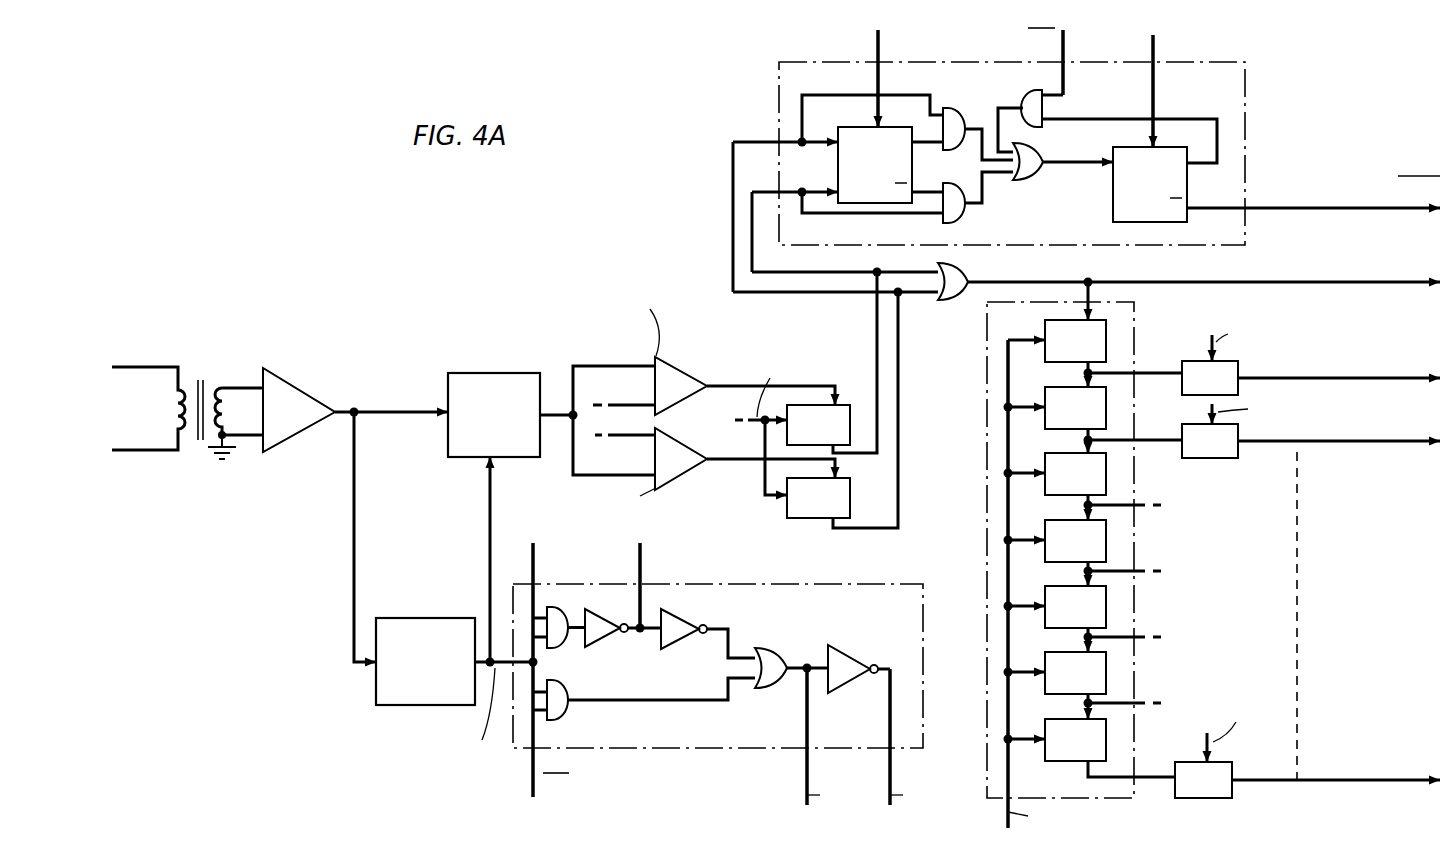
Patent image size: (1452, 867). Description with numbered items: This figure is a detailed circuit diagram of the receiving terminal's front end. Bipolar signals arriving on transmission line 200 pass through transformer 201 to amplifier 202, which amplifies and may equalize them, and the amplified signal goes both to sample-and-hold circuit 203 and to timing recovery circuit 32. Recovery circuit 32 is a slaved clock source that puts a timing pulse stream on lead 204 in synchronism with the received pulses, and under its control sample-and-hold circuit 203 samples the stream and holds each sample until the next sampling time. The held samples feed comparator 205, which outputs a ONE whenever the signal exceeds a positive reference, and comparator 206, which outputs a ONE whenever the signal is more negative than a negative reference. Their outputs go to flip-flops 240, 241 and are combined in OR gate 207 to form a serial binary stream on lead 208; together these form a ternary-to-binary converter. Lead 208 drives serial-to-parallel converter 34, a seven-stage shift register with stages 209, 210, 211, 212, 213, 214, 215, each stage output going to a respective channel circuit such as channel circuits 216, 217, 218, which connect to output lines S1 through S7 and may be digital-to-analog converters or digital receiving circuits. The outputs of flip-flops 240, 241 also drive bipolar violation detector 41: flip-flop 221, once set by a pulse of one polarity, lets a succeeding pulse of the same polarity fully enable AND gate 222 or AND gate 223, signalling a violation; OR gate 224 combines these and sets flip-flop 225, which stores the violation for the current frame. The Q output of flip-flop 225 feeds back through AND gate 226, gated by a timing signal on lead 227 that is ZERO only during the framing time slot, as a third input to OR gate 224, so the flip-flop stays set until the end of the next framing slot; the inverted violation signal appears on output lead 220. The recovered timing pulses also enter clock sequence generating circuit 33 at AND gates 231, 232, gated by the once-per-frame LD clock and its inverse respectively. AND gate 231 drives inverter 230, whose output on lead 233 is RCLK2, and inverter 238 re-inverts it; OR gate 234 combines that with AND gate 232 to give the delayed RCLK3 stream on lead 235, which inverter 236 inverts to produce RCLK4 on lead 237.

The transmission line 200 is at (163, 400).
The transformer 201 is at (229, 357).
The amplifier 202 is at (304, 384).
The sample-and-hold circuit 203 is at (505, 373).
The lead 204 is at (508, 668).
The comparator 205 is at (682, 371).
The comparator 206 is at (694, 455).
The OR gate 207 is at (950, 301).
The lead 208 is at (1006, 282).
The shift register stage 209 is at (1107, 333).
The shift register stage 210 is at (1107, 410).
The shift register stage 211 is at (1107, 478).
The shift register stage 212 is at (1107, 545).
The shift register stage 213 is at (1107, 608).
The shift register stage 214 is at (1107, 675).
The shift register stage 215 is at (1107, 740).
The channel circuit 216 is at (1240, 368).
The channel circuit 217 is at (1222, 458).
The channel circuit 218 is at (1226, 798).
The output lead 220 is at (1275, 209).
The flip-flop 221 is at (851, 127).
The AND gate 222 is at (950, 108).
The AND gate 223 is at (968, 213).
The OR gate 224 is at (1040, 178).
The flip-flop 225 is at (1124, 147).
The AND gate 226 is at (1028, 94).
The lead 227 is at (1063, 81).
The inverter 230 is at (601, 621).
The AND gate 231 is at (557, 648).
The AND gate 232 is at (565, 717).
The lead 233 is at (640, 563).
The OR gate 234 is at (776, 652).
The lead 235 is at (807, 765).
The inverter 236 is at (846, 652).
The lead 237 is at (890, 765).
The inverter 238 is at (680, 622).
The flip-flop 240 is at (843, 401).
The flip-flop 241 is at (808, 520).
The timing recovery circuit 32 is at (430, 618).
The clock sequence generating circuit 33 is at (818, 586).
The serial-to-parallel converter 34 is at (987, 440).
The bipolar violation detector 41 is at (1245, 141).